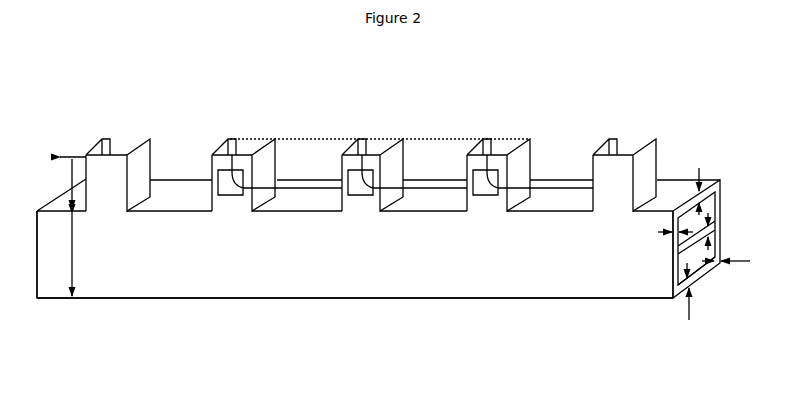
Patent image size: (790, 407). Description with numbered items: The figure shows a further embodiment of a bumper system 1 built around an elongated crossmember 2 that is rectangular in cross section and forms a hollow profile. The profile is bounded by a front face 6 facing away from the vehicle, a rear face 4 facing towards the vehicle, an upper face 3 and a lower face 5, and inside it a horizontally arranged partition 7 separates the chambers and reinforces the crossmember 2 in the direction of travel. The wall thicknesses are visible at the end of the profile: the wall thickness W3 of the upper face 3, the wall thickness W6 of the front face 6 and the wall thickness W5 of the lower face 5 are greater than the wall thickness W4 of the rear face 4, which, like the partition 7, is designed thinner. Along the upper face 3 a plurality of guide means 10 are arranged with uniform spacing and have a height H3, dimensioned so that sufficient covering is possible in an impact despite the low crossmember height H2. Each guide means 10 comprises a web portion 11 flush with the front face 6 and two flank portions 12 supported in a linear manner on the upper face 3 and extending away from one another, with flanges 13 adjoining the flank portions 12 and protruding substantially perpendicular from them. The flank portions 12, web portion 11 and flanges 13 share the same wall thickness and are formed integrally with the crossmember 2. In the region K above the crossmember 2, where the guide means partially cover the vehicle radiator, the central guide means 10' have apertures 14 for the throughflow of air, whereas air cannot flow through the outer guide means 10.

The bumper system 1 is at (93, 316).
The crossmember 2 is at (259, 303).
The upper face 3 is at (437, 198).
The rear face 4 is at (721, 204).
The lower face 5 is at (698, 278).
The front face 6 is at (568, 265).
The partition 7 is at (680, 243).
The guide means 10 is at (82, 124).
The guide means with aperture 10' is at (599, 152).
The web portion 11 is at (106, 183).
The flank portion 12 is at (137, 175).
The flange 13 is at (237, 138).
The aperture 14 is at (353, 139).
The vehicle radiator region K is at (311, 139).
The crossmember height H2 is at (57, 254).
The height of guide means H3 is at (62, 183).
The wall thickness of upper face W3 is at (696, 199).
The wall thickness of rear face W4 is at (728, 274).
The wall thickness of lower face W5 is at (686, 300).
The wall thickness of front face W6 is at (666, 244).